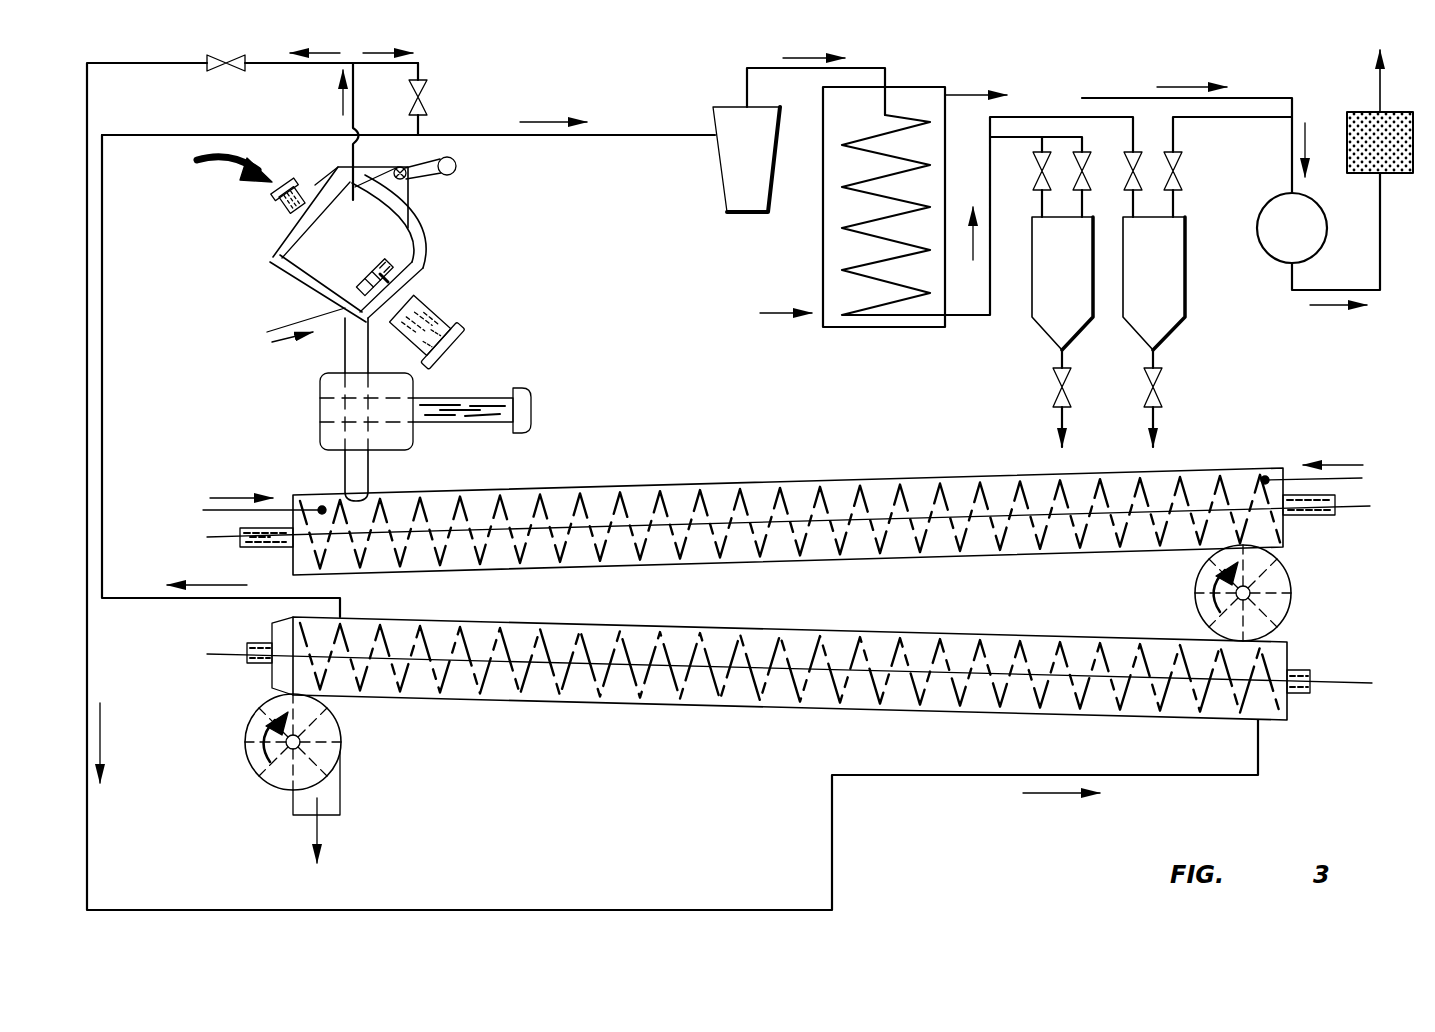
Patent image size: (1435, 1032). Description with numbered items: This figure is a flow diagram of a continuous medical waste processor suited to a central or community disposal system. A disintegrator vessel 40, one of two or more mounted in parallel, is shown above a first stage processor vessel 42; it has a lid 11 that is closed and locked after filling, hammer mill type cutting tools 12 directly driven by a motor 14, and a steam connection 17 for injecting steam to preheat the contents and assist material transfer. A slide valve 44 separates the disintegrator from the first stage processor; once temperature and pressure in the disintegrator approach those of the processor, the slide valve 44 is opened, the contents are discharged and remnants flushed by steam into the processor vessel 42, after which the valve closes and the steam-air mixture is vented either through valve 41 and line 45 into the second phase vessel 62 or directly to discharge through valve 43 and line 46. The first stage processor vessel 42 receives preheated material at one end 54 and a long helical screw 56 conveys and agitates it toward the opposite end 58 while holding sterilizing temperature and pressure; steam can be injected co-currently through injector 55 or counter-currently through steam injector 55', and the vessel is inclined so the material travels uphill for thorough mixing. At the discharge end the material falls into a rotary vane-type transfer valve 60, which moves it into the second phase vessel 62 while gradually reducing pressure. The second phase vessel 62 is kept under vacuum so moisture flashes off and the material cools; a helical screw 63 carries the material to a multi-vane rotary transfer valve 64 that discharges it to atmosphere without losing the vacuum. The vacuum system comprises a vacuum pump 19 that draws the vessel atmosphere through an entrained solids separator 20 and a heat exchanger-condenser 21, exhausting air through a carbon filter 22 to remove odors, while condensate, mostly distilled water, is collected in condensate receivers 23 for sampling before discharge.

The lid 11 is at (292, 232).
The cutting tools 12 is at (423, 263).
The motor 14 is at (427, 288).
The steam connection 17 is at (290, 329).
The vacuum pump 19 is at (1280, 250).
The entrained solids separator 20 is at (725, 188).
The heat exchanger-condenser 21 is at (867, 285).
The carbon filter 22 is at (1362, 142).
The condensate receiver 23 is at (1057, 318).
The disintegrator vessel 40 is at (410, 232).
The valve 41 is at (216, 77).
The first stage processor vessel 42 is at (967, 535).
The valve 43 is at (428, 110).
The slide valve 44 is at (478, 397).
The line 45 is at (90, 651).
The line 46 is at (555, 138).
The receiving end 54 is at (300, 565).
The steam injector 55 is at (244, 512).
The steam injector 55' is at (1334, 473).
The helical screw 56 is at (683, 553).
The discharge end 58 is at (1288, 530).
The rotary vane-type transfer valve 60 is at (1277, 597).
The second phase vessel 62 is at (683, 690).
The helical screw 63 is at (1100, 658).
The multi-vane rotary transfer valve 64 is at (255, 760).